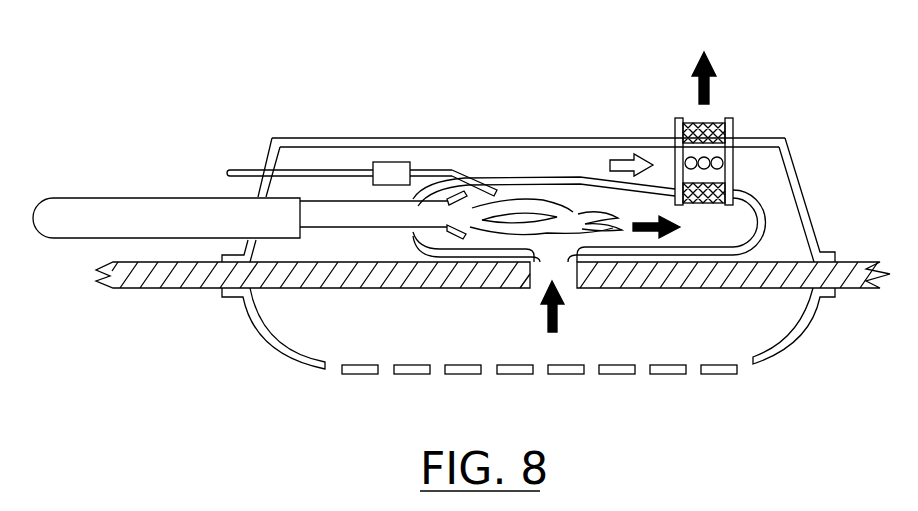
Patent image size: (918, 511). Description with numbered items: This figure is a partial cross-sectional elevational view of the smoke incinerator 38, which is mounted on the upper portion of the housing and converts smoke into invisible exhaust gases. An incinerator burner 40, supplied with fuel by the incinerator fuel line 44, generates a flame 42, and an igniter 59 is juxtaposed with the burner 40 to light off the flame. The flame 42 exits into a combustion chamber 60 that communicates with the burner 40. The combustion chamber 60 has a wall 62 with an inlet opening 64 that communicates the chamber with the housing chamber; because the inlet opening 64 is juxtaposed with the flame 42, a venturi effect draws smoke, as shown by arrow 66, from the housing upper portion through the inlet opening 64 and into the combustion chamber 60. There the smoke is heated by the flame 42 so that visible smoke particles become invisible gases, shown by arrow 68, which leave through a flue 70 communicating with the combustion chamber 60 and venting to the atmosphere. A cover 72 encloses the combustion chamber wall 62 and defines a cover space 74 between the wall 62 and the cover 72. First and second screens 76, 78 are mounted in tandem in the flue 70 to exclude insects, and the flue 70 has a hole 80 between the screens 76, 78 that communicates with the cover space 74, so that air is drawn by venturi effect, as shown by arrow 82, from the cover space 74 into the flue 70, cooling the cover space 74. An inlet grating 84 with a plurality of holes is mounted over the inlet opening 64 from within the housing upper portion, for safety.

The smoke incinerator 38 is at (391, 142).
The incinerator burner 40 is at (332, 200).
The flame 42 is at (522, 203).
The incinerator fuel line 44 is at (180, 198).
The igniter 59 is at (373, 162).
The combustion chamber 60 is at (557, 193).
The combustion chamber wall 62 is at (492, 175).
The inlet opening 64 is at (535, 293).
The arrow (smoke flow) 66 is at (560, 322).
The arrow (invisible gases) 68 is at (712, 58).
The flue 70 is at (733, 133).
The cover 72 is at (332, 142).
The cover space 74 is at (468, 178).
The first screen 76 is at (708, 184).
The second screen 78 is at (707, 122).
The hole 80 is at (698, 155).
The arrow (cooling air flow) 82 is at (628, 153).
The inlet grating 84 is at (618, 374).